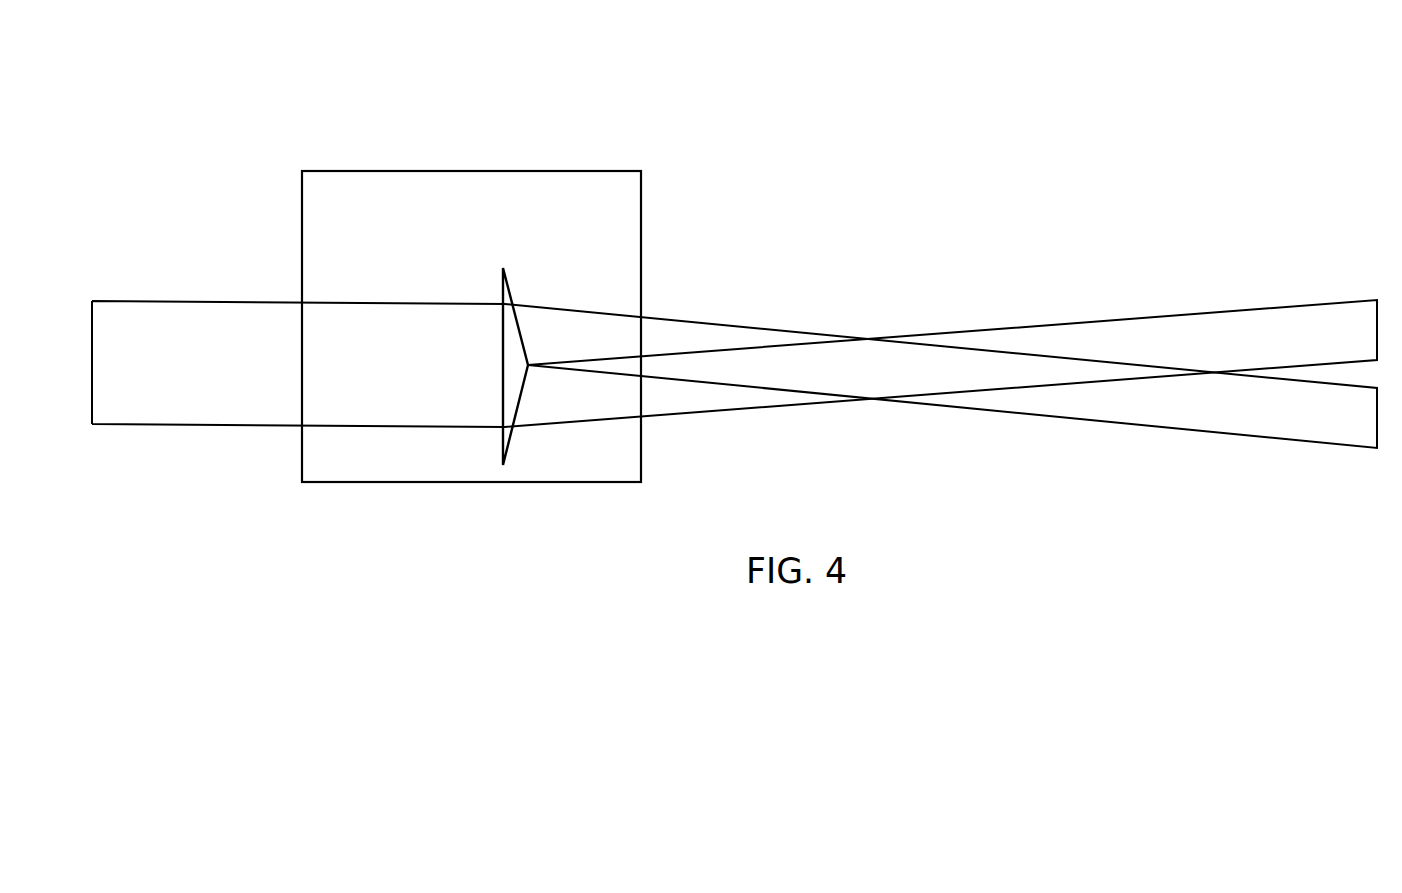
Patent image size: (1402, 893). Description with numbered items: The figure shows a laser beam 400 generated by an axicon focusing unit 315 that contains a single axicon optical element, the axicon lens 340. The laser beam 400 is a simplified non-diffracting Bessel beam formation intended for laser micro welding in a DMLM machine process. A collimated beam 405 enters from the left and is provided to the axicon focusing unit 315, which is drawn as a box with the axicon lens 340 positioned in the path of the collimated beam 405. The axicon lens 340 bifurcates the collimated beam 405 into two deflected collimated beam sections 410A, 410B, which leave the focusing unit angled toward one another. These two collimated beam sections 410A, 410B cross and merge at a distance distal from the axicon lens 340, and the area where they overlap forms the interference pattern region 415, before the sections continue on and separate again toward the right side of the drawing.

The laser beam 400 is at (1133, 88).
The axicon focusing unit 315 is at (474, 170).
The collimated beam 405 is at (180, 408).
The axicon lens 340 is at (502, 398).
The deflected collimated beam section 410B is at (610, 323).
The deflected collimated beam section 410A is at (610, 407).
The interference pattern region 415 is at (868, 350).